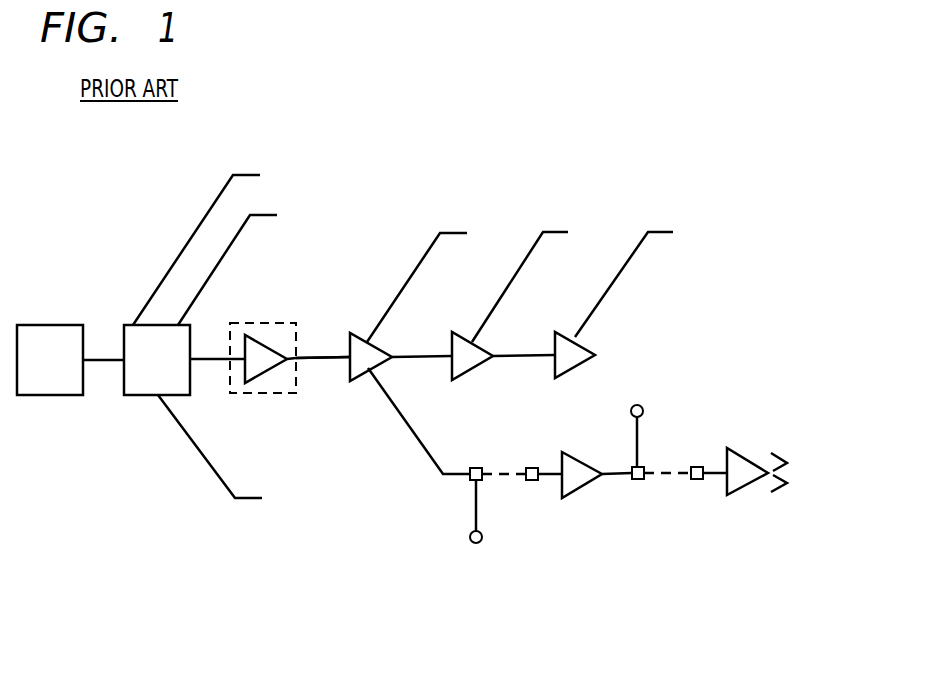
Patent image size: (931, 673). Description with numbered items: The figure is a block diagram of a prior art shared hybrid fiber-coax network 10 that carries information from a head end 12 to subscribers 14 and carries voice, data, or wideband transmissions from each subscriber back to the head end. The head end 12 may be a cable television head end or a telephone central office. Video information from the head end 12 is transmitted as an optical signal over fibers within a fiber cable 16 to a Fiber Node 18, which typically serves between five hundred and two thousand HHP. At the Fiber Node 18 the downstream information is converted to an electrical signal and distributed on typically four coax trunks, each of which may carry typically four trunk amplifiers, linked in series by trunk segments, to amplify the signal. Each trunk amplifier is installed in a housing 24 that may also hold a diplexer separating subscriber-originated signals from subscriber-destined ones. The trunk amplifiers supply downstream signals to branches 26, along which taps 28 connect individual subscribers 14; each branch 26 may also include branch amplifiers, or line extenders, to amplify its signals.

The shared hybrid fiber-coax network 10 is at (436, 113).
The head end 12 is at (53, 324).
The subscribers 14 is at (643, 409).
The fiber cable 16 is at (106, 358).
The Fiber Node (FN) 18 is at (125, 396).
The housing 24 is at (268, 396).
The branch 26 is at (555, 230).
The tap 28 is at (483, 478).